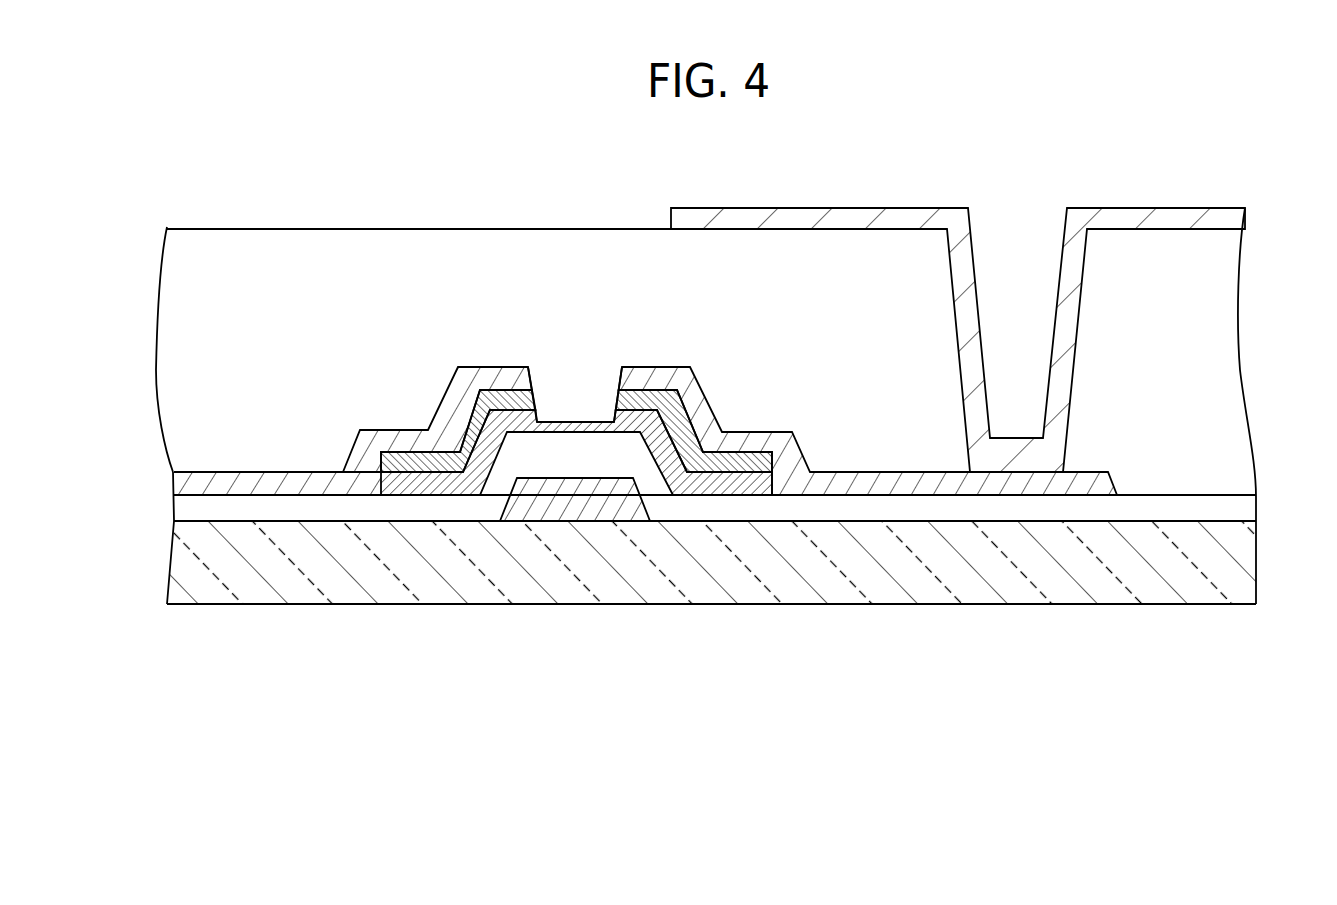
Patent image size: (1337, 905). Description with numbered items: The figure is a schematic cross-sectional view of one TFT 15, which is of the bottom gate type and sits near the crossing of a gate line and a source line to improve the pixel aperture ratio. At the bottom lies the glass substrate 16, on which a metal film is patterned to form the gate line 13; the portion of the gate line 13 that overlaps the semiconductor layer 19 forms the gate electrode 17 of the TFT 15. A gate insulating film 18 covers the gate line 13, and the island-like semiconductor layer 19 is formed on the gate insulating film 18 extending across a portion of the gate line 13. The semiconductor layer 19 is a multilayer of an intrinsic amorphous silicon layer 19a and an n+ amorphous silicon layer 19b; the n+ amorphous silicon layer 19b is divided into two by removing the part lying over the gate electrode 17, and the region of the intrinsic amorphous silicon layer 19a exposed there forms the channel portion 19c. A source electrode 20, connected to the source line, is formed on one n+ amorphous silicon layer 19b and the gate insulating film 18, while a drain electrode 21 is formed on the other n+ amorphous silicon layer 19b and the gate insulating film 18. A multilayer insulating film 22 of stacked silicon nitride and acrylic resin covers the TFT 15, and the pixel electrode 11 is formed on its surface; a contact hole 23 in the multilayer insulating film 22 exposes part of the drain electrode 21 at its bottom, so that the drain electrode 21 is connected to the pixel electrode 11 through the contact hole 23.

The pixel electrode 11 is at (1175, 218).
The gate line 13 is at (579, 575).
The TFT 15 is at (672, 421).
The glass substrate 16 is at (187, 558).
The gate electrode 17 is at (580, 505).
The gate insulating film 18 is at (1250, 513).
The semiconductor layer 19 is at (402, 427).
The intrinsic amorphous silicon layer 19a is at (355, 484).
The n+ amorphous silicon layer 19b is at (350, 458).
The channel portion 19c is at (615, 410).
The source electrode 20 is at (176, 488).
The drain electrode 21 is at (1103, 490).
The multilayer insulating film 22 is at (1218, 288).
The contact hole 23 is at (953, 308).